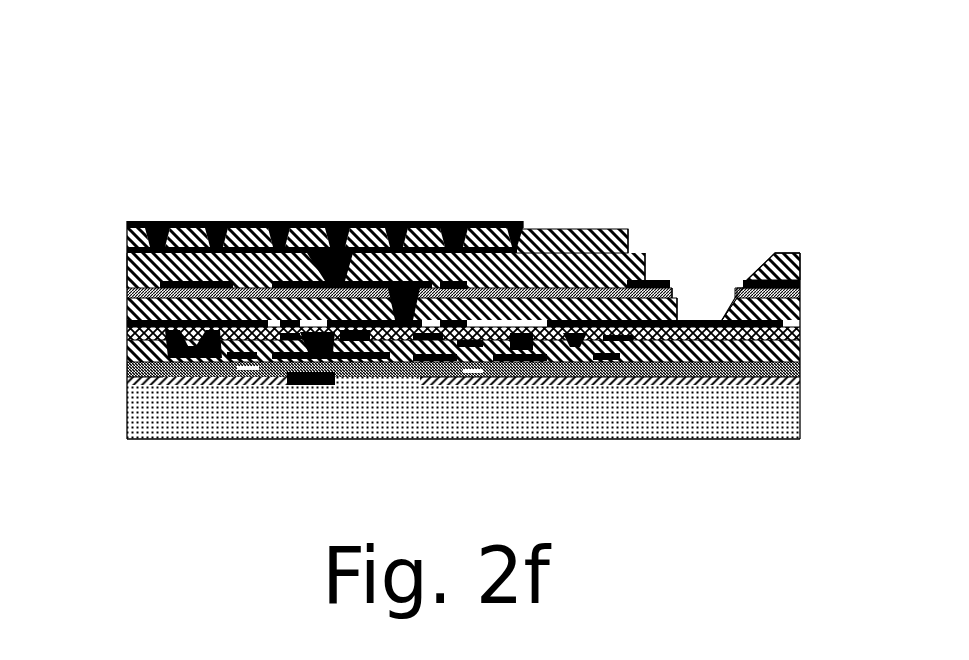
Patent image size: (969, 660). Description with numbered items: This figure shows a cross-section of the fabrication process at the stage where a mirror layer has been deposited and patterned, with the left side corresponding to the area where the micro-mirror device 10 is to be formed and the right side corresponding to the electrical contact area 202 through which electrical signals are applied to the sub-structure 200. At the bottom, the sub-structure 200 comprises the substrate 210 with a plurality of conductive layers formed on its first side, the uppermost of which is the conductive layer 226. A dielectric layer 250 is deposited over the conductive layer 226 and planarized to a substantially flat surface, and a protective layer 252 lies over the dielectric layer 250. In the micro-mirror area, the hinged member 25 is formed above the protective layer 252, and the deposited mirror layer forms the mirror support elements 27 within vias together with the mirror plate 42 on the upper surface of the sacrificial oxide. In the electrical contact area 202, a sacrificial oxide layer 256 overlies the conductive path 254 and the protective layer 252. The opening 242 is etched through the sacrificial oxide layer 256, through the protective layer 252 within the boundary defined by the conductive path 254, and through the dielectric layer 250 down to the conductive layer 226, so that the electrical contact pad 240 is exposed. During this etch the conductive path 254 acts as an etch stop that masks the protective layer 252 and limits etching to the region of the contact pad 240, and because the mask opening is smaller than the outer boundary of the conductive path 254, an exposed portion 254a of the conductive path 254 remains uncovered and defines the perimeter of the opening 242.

The micro-mirror device 10 is at (254, 60).
The electrical contact area 202 is at (661, 85).
The opening 242 is at (717, 265).
The electrical contact pad 240 is at (718, 313).
The conductive layer 226 is at (703, 318).
The exposed portion of the conductive path 254a is at (665, 283).
The conductive path 254 is at (747, 282).
The sacrificial oxide layer 256 is at (763, 253).
The protective layer 252 is at (563, 262).
The mirror plate 42 is at (199, 220).
The mirror support elements 27 is at (127, 235).
The hinged member 25 is at (127, 255).
The sub-structure 200 is at (118, 437).
The substrate 210 is at (412, 425).
The dielectric layer 250 is at (783, 330).